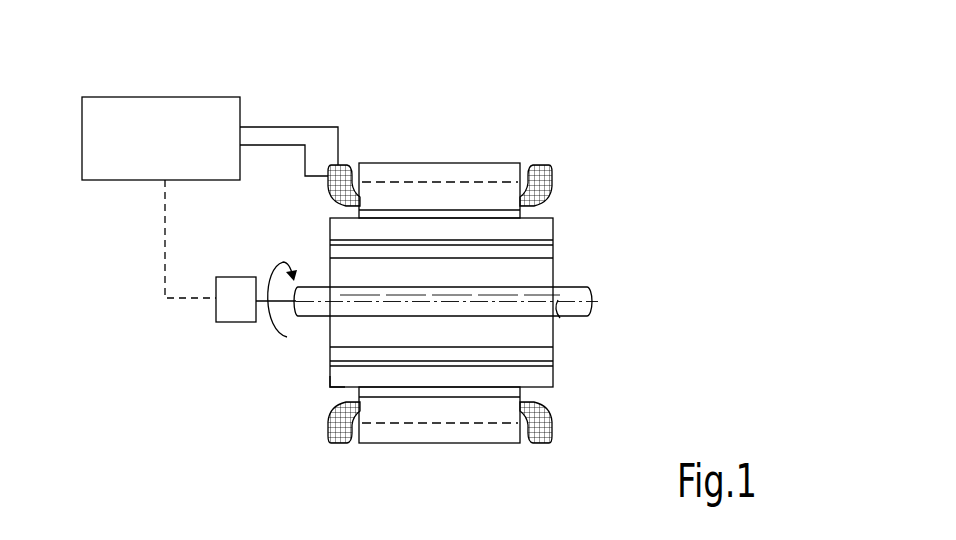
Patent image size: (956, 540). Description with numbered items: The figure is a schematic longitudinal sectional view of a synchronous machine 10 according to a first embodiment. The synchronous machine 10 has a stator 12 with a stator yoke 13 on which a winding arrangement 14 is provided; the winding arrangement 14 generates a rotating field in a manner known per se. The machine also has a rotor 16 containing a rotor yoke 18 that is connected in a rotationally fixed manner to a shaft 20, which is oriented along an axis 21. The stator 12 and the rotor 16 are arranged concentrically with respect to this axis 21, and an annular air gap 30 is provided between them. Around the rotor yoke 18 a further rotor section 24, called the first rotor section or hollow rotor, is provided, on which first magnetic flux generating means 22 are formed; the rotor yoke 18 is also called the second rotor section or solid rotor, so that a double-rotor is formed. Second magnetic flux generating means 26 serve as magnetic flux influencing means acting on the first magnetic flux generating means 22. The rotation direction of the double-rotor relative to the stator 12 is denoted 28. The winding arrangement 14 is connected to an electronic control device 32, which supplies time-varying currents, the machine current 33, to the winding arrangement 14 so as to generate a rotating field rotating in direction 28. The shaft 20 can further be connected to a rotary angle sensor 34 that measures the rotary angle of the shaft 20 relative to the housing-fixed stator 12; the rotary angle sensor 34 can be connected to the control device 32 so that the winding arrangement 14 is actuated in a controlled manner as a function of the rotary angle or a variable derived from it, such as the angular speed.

The synchronous machine 10 is at (692, 160).
The stator 12 is at (512, 156).
The stator yoke 13 is at (475, 410).
The winding arrangement 14 is at (556, 178).
The rotor 16 is at (326, 336).
The rotor yoke 18 is at (527, 273).
The shaft 20 is at (572, 296).
The axis 21 is at (560, 308).
The first magnetic flux generating means 22 is at (518, 382).
The further rotor section 24 is at (326, 378).
The second magnetic flux generating means 26 is at (545, 253).
The rotation direction 28 is at (270, 270).
The annular air gap 30 is at (492, 393).
The electronic control device 32 is at (218, 118).
The machine current 33 is at (313, 134).
The rotary angle sensor 34 is at (230, 305).